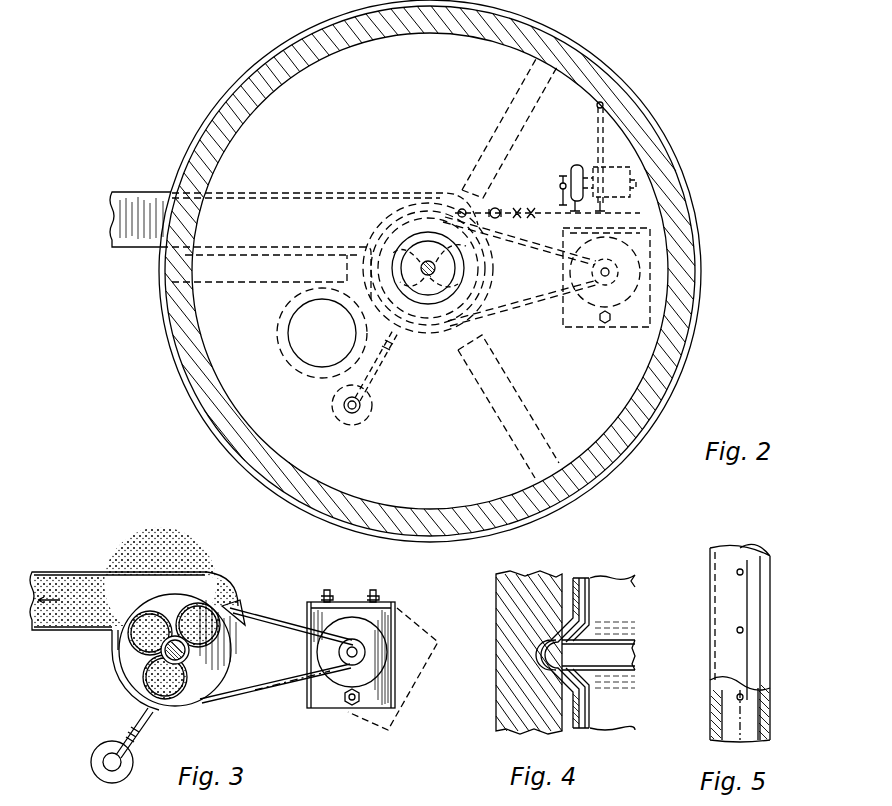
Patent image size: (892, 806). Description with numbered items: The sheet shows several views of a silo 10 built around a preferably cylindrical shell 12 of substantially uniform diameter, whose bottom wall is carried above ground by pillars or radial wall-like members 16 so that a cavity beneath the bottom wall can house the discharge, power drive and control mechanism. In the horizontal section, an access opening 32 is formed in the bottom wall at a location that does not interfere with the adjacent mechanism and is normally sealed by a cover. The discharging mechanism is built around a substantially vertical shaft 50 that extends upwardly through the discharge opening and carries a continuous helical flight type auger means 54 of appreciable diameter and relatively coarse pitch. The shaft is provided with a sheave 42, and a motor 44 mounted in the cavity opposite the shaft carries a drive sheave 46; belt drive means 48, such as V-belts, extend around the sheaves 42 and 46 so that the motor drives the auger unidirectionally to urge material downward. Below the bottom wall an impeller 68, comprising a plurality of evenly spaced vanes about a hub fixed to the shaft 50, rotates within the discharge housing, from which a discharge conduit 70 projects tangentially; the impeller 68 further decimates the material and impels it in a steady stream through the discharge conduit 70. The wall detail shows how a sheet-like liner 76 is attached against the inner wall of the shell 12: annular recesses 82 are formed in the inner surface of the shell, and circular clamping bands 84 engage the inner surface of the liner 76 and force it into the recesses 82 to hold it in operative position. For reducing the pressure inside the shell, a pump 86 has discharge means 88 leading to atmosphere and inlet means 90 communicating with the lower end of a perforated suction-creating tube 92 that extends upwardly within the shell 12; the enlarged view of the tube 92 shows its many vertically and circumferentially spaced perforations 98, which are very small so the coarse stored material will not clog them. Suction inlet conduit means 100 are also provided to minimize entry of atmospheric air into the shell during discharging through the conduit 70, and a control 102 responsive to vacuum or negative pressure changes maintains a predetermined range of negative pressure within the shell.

In FIG. 2, the silo 10 is at (647, 81).
In FIG. 2, the shell 12 is at (662, 170).
In FIG. 4, the shell 12 is at (537, 574).
In FIG. 2, the radial wall-like members 16 is at (512, 86).
In FIG. 2, the access opening 32 is at (290, 337).
In FIG. 2, the sheave 42 is at (490, 254).
In FIG. 3, the sheave 42 is at (236, 615).
In FIG. 2, the motor 44 is at (689, 296).
In FIG. 3, the motor 44 is at (344, 690).
In FIG. 2, the drive sheave 46 is at (652, 244).
In FIG. 3, the drive sheave 46 is at (352, 638).
In FIG. 2, the belt drive means 48 is at (504, 308).
In FIG. 3, the belt drive means 48 is at (263, 700).
In FIG. 2, the shaft 50 is at (420, 262).
In FIG. 3, the shaft 50 is at (216, 652).
In FIG. 2, the auger means 54 is at (432, 261).
In FIG. 2, the impeller 68 is at (407, 330).
In FIG. 3, the impeller 68 is at (196, 598).
In FIG. 2, the discharge conduit 70 is at (149, 192).
In FIG. 3, the discharge conduit 70 is at (76, 563).
In FIG. 4, the liner 76 is at (584, 598).
In FIG. 4, the annular recesses 82 is at (540, 655).
In FIG. 4, the clamping bands 84 is at (626, 672).
In FIG. 2, the pump 86 is at (578, 165).
In FIG. 2, the discharge means 88 is at (688, 212).
In FIG. 2, the inlet means 90 is at (561, 178).
In FIG. 2, the suction-creating tube 92 is at (597, 109).
In FIG. 5, the suction-creating tube 92 is at (772, 687).
In FIG. 5, the perforations 98 is at (739, 569).
In FIG. 2, the suction inlet conduit means 100 is at (546, 211).
In FIG. 2, the control 102 is at (345, 422).
In FIG. 3, the control 102 is at (90, 761).